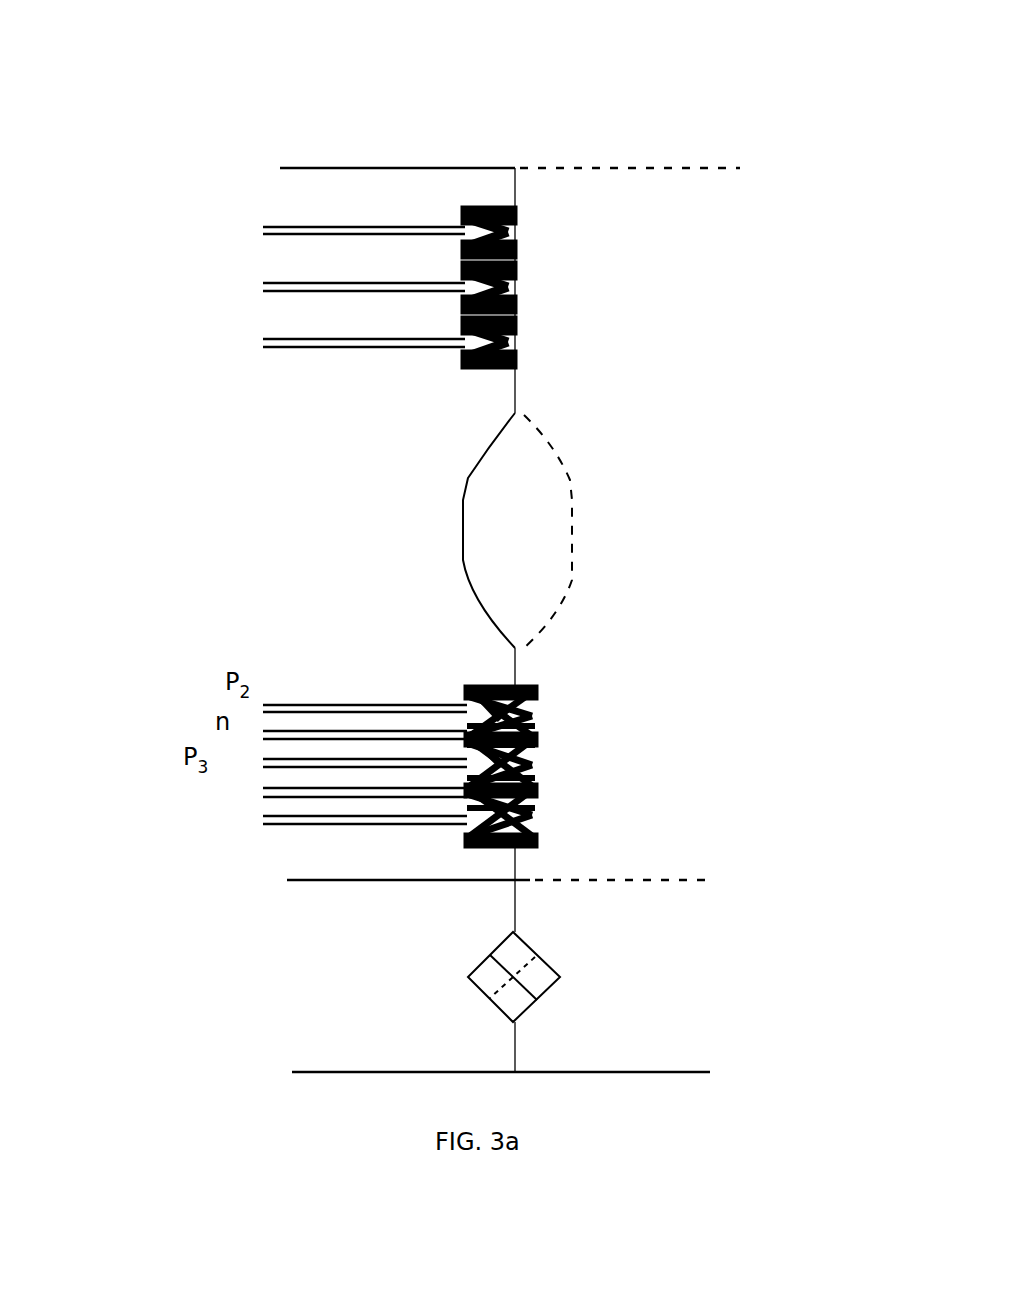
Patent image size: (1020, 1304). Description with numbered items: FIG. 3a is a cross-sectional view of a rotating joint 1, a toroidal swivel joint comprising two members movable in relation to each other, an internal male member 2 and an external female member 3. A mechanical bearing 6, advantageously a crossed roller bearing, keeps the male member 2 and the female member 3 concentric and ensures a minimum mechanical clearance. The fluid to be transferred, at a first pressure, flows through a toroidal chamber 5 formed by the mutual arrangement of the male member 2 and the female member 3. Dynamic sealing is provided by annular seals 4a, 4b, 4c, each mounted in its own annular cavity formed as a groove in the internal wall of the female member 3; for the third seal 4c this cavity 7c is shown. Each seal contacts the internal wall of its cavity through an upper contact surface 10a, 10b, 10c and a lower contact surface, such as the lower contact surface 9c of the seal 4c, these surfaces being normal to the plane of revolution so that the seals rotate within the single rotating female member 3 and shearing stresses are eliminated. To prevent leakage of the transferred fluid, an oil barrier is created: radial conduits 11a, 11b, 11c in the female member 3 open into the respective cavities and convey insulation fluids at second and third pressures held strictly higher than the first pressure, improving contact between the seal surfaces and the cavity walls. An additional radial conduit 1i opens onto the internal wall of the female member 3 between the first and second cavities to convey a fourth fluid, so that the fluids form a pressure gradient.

The rotating joint 1 is at (378, 128).
The additional radial conduit 1i is at (140, 733).
The internal male member 2 is at (692, 185).
The external female member 3 is at (262, 188).
The annular seal 4a is at (535, 690).
The annular seal 4b is at (538, 745).
The annular seal 4c is at (538, 825).
The toroidal chamber 5 is at (560, 532).
The mechanical bearing 6 is at (645, 1022).
The annular cavity 7c is at (538, 808).
The lower contact surface 9c is at (520, 850).
The upper contact surface 10a is at (474, 672).
The upper contact surface 10b is at (467, 735).
The upper contact surface 10c is at (538, 792).
The radial conduit 11a is at (245, 702).
The radial conduit 11b is at (238, 772).
The radial conduit 11c is at (238, 829).